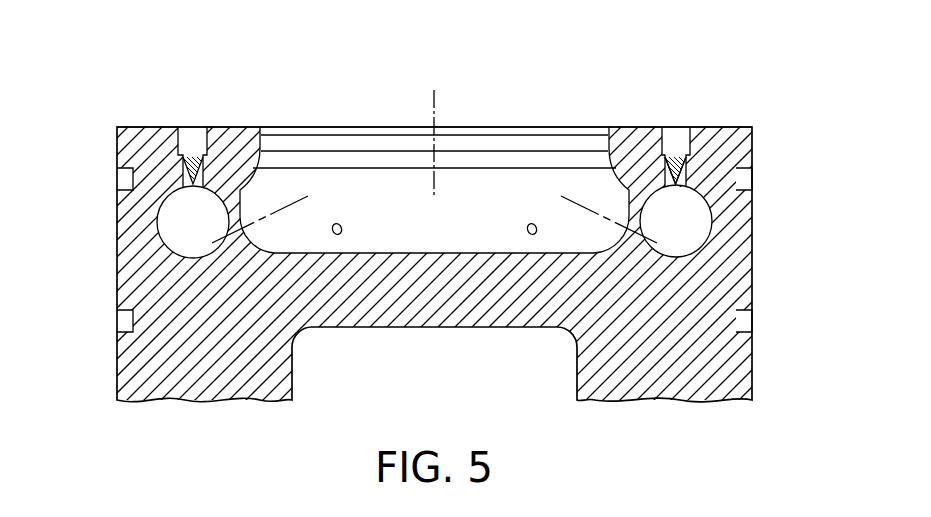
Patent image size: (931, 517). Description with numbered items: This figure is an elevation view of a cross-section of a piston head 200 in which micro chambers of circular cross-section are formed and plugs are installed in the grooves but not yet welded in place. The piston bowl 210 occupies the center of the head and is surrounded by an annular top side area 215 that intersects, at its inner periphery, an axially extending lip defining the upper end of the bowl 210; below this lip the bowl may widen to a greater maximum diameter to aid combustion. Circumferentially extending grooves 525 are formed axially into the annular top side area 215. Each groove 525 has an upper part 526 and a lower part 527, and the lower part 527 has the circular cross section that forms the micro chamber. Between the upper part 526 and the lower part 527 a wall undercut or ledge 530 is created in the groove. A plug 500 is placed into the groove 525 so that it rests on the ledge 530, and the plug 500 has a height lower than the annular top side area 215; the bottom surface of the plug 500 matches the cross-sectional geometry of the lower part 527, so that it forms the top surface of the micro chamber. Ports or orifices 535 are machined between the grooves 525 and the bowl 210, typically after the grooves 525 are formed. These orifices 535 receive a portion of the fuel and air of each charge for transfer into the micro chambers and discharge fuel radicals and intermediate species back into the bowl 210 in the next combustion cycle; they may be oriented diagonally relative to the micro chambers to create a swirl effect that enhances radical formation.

The piston 200 is at (780, 322).
The piston bowl 210 is at (487, 217).
The annular top side area 215 is at (633, 127).
The circumferentially extending groove 525 is at (671, 117).
The upper part 526 is at (200, 127).
The lower part 527 is at (162, 236).
The ledge 530 is at (681, 160).
The plug 500 is at (176, 157).
The orifice 535 is at (225, 239).